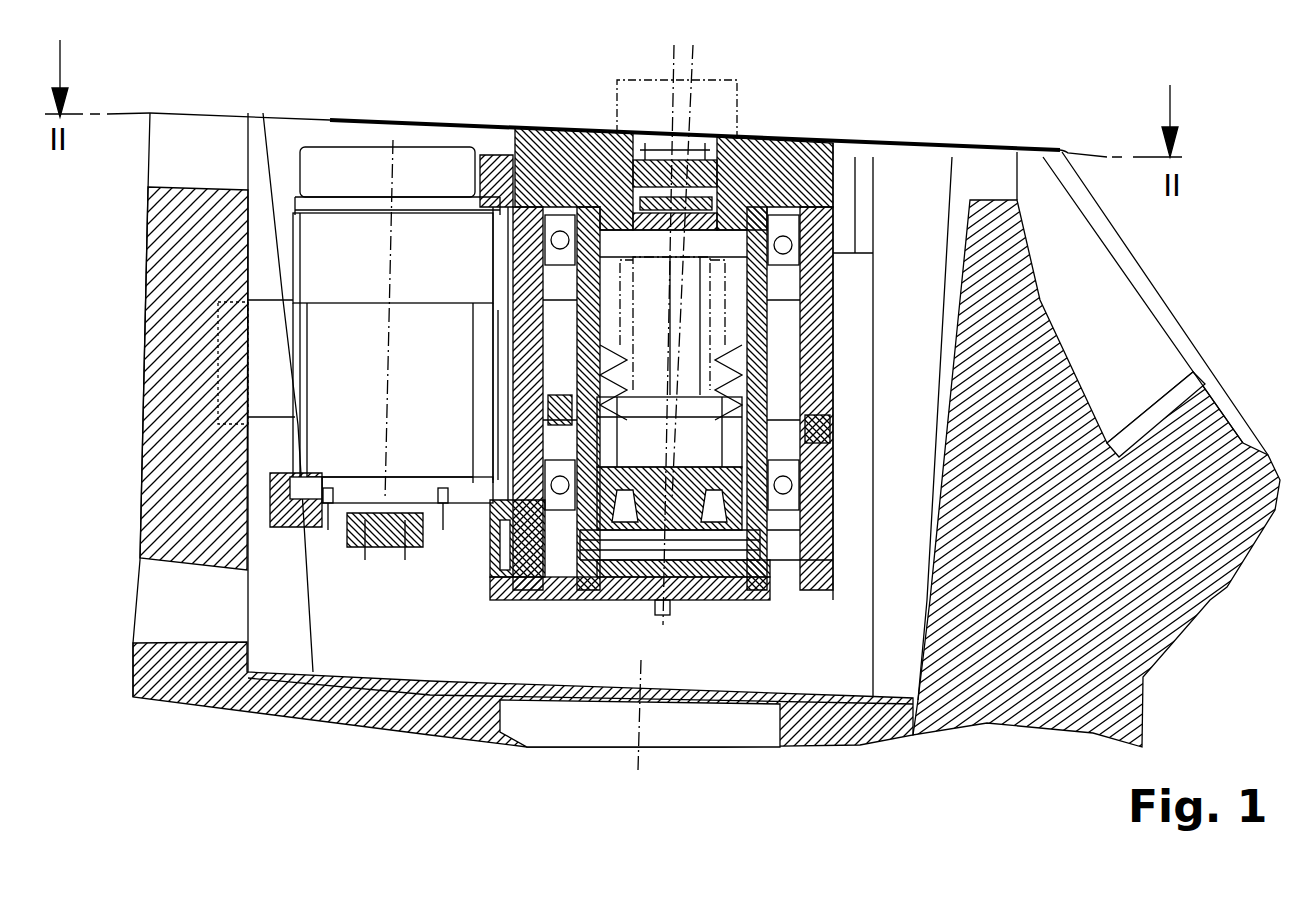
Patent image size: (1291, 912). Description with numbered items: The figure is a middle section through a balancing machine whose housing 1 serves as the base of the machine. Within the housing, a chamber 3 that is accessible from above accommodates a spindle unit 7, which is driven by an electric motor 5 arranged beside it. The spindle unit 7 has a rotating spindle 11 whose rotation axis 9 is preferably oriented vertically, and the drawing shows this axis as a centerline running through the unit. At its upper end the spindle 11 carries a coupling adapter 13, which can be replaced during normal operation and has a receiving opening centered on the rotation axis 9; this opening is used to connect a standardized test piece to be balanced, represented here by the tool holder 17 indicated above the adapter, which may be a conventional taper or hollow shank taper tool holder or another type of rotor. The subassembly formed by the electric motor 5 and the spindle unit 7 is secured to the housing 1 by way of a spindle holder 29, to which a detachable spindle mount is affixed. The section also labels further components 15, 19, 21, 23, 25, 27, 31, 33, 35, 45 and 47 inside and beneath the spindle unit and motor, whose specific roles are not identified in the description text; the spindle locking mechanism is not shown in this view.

The housing 1 is at (1207, 590).
The chamber 3 is at (893, 700).
The electric motor 5 is at (325, 233).
The spindle unit 7 is at (843, 205).
The rotation axis 9 is at (670, 335).
The spindle 11 is at (772, 334).
The coupling adapter 13 is at (753, 135).
The nut 15 is at (648, 145).
The tool holder 17 is at (606, 80).
The coupling 19 is at (672, 323).
The bearing cover 21 is at (695, 145).
The bearing cap 23 is at (573, 140).
The upper bearing 25 is at (836, 250).
The lower bearing 27 is at (833, 503).
The spindle holder 29 is at (836, 382).
The fastening screw 31 is at (540, 406).
The bottom cover 33 is at (778, 545).
The motor flange 35 is at (275, 528).
The base plate 45 is at (765, 578).
The bracket 47 is at (452, 560).